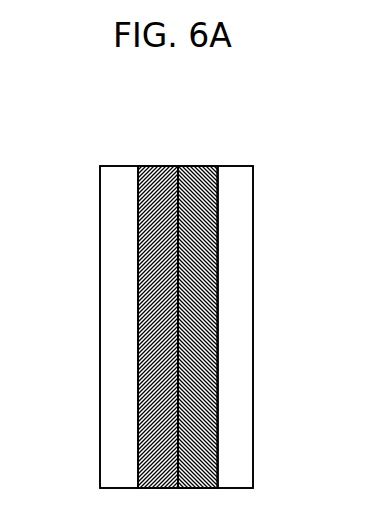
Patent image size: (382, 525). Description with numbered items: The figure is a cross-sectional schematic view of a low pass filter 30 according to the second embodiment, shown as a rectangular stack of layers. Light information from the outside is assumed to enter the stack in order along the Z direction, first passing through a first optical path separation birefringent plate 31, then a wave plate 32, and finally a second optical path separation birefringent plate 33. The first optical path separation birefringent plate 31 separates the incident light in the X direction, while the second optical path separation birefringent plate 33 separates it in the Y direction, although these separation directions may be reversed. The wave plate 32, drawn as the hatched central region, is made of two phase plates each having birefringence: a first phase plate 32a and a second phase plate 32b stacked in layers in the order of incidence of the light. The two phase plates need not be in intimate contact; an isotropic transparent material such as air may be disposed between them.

The low pass filter 30 is at (66, 159).
The first optical path separation birefringent plate 31 is at (122, 368).
The wave plate 32 is at (197, 274).
The first phase plate 32a is at (158, 187).
The second phase plate 32b is at (216, 298).
The second optical path separation birefringent plate 33 is at (237, 372).